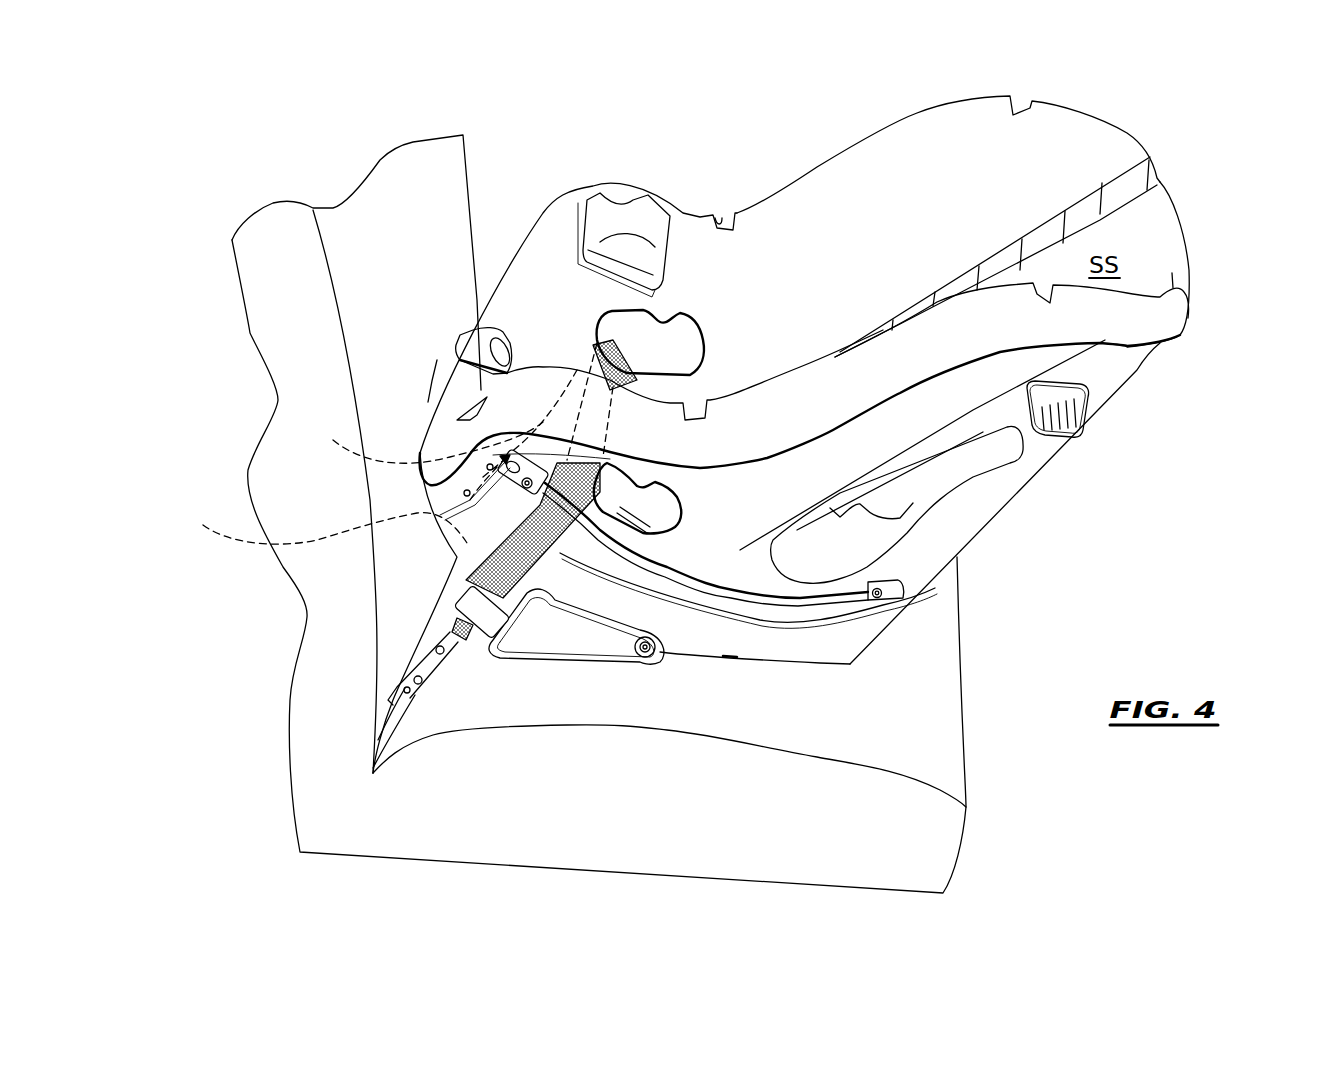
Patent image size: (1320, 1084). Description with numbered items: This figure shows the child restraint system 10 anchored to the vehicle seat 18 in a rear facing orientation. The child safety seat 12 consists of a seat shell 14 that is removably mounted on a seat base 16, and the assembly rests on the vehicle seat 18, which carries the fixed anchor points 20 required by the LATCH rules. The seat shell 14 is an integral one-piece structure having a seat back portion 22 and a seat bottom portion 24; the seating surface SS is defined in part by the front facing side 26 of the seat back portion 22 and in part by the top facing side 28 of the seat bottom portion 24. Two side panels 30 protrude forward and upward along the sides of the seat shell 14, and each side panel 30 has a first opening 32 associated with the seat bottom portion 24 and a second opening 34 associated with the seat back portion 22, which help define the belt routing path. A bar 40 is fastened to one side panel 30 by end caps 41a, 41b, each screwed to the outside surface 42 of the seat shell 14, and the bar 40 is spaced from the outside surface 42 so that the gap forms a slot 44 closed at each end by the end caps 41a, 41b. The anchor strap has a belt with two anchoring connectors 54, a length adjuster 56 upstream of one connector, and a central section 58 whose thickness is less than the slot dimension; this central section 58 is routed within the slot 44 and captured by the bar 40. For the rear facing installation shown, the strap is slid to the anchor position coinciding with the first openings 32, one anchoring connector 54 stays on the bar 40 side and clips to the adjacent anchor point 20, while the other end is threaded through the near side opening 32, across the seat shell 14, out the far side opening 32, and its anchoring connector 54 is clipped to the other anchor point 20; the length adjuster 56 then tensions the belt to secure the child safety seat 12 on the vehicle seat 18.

The child restraint system 10 is at (1107, 537).
The child safety seat 12 is at (983, 587).
The seat shell 14 is at (927, 590).
The seat base 16 is at (757, 640).
The vehicle seat 18 is at (330, 690).
The anchor points 20 is at (453, 707).
The seat back portion 22 is at (1030, 457).
The seat bottom portion 24 is at (827, 613).
The front facing side 26 is at (1150, 217).
The top facing side 28 is at (523, 363).
The side panels 30 is at (853, 223).
The first opening 32 is at (633, 203).
The second opening 34 is at (877, 527).
The bar 40 is at (750, 587).
The end cap 41a is at (600, 457).
The end cap 41b is at (887, 597).
The outside surface 42 is at (610, 567).
The slot 44 is at (666, 565).
The anchoring connectors 54 is at (427, 653).
The length adjuster 56 is at (603, 403).
The central section 58 is at (480, 620).